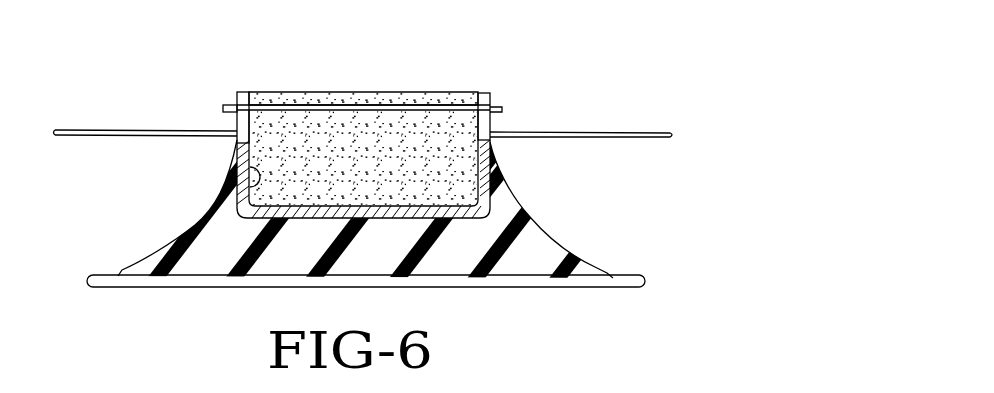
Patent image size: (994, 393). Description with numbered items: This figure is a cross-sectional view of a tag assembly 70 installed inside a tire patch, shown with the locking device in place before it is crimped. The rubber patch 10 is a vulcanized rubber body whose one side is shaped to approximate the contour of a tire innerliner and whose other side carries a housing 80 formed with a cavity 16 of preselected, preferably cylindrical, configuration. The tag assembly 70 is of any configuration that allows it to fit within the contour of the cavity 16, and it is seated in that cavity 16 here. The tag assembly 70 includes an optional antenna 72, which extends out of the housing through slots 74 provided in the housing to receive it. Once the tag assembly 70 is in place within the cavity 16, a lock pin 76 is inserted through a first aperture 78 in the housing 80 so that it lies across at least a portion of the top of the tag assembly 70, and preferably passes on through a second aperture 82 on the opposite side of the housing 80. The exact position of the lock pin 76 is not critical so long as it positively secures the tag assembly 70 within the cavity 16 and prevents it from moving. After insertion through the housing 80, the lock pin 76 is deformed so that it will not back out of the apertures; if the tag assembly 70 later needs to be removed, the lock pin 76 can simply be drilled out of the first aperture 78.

The rubber patch 10 is at (550, 233).
The cavity 16 is at (237, 193).
The tag assembly 70 is at (363, 90).
The antenna 72 is at (538, 133).
The slots 74 is at (234, 128).
The lock pin 76 is at (235, 100).
The first aperture 78 is at (250, 107).
The housing 80 is at (243, 92).
The second aperture 82 is at (495, 108).